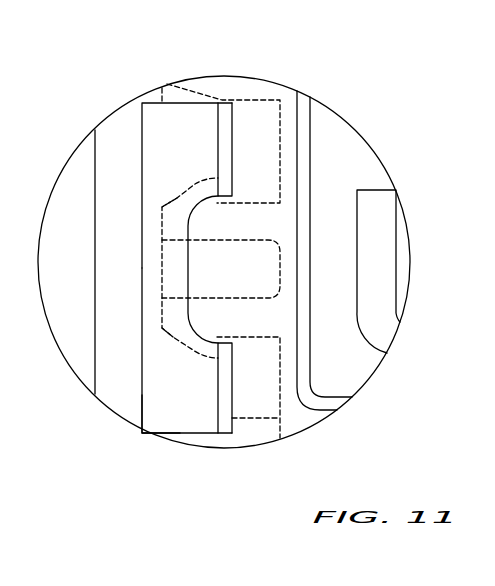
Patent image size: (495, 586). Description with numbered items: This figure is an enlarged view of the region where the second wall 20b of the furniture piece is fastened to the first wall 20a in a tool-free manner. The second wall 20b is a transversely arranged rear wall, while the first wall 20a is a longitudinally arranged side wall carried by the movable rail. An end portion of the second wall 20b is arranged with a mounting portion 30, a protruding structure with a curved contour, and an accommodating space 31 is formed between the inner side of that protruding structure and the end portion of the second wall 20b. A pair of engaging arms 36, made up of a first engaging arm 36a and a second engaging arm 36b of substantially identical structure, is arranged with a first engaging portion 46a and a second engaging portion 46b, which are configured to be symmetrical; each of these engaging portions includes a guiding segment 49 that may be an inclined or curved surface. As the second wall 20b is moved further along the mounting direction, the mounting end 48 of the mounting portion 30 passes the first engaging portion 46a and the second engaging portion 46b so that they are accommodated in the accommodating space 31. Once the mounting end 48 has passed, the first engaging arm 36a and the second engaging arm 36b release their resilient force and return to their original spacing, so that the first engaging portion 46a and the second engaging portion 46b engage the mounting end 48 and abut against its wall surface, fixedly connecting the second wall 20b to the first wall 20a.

The first wall 20a is at (383, 222).
The second wall 20b is at (63, 203).
The mounting portion 30 is at (180, 268).
The accommodating space 31 is at (177, 390).
The engaging arm 36 is at (297, 215).
The first engaging arm 36a is at (250, 220).
The second engaging arm 36b is at (250, 312).
The first engaging portion 46a is at (194, 183).
The second engaging portion 46b is at (187, 333).
The mounting end 48 is at (223, 192).
The guiding segment 49 is at (177, 198).